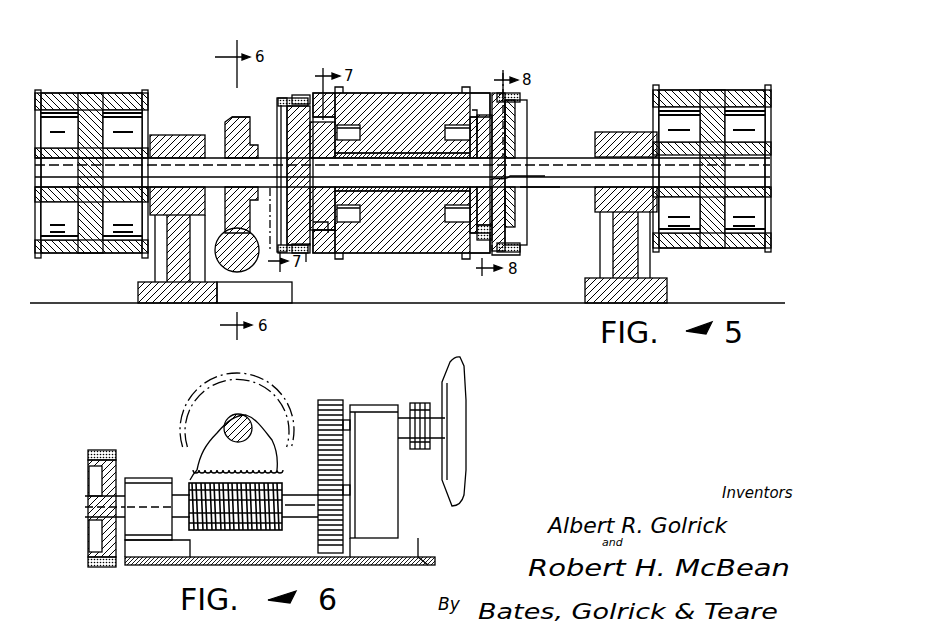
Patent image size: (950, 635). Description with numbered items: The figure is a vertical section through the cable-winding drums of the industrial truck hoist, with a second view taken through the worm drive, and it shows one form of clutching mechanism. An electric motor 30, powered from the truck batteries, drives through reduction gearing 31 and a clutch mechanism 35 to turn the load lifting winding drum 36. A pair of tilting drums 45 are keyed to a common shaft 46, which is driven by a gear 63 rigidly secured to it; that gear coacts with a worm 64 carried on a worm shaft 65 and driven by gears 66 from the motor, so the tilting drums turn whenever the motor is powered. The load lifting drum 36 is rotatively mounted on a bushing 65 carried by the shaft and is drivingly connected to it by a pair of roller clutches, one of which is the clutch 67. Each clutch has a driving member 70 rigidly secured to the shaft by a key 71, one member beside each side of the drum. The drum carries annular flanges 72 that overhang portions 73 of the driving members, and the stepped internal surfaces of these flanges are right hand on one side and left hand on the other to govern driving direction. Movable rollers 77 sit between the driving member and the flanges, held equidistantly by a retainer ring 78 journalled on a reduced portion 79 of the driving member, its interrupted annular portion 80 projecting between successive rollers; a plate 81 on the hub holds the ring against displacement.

In FIG. 6, the electric motor 30 is at (460, 400).
In FIG. 5, the reduction gearing 31 is at (240, 118).
In FIG. 6, the reduction gearing 31 is at (196, 480).
In FIG. 5, the clutch mechanism 35 is at (325, 96).
In FIG. 5, the winding drum 36 is at (440, 100).
In FIG. 5, the drums 45 is at (112, 80).
In FIG. 5, the shaft 46 is at (540, 158).
In FIG. 5, the gear 63 is at (228, 130).
In FIG. 6, the gear 63 is at (237, 423).
In FIG. 5, the worm 64 is at (268, 282).
In FIG. 6, the worm 64 is at (268, 530).
In FIG. 5, the shaft 65 is at (388, 153).
In FIG. 6, the shaft 65 is at (86, 505).
In FIG. 5, the gears 66 is at (287, 98).
In FIG. 6, the gears 66 is at (322, 495).
In FIG. 5, the roller clutch 67 is at (520, 100).
In FIG. 5, the driving member 70 is at (310, 210).
In FIG. 5, the key 71 is at (512, 148).
In FIG. 5, the annular flanges 72 is at (482, 95).
In FIG. 5, the portions 73 is at (512, 231).
In FIG. 5, the rollers 77 is at (522, 247).
In FIG. 5, the retainer ring 78 is at (306, 260).
In FIG. 5, the reduced portion 79 is at (530, 190).
In FIG. 5, the interrupted annular portion 80 is at (320, 240).
In FIG. 5, the plate 81 is at (518, 216).